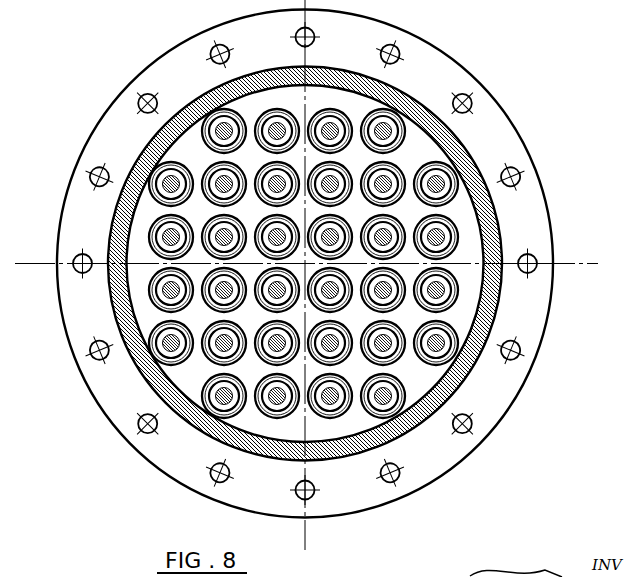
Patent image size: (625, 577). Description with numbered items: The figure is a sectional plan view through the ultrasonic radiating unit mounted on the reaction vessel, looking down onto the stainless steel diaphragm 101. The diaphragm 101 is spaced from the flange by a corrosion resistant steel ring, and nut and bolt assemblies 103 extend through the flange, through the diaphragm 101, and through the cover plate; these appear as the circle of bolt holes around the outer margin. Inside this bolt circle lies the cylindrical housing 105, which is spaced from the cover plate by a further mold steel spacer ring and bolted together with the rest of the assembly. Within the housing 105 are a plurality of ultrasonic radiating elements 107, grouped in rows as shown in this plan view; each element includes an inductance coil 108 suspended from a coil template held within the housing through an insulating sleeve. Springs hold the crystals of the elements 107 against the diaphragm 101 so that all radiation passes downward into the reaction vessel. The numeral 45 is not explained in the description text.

The tube sheet 45 is at (523, 248).
The flange 101 is at (530, 290).
The bolt hole 103 is at (517, 343).
The seal ring 105 is at (462, 156).
The tube 107 is at (461, 221).
The inner plate 108 is at (392, 104).